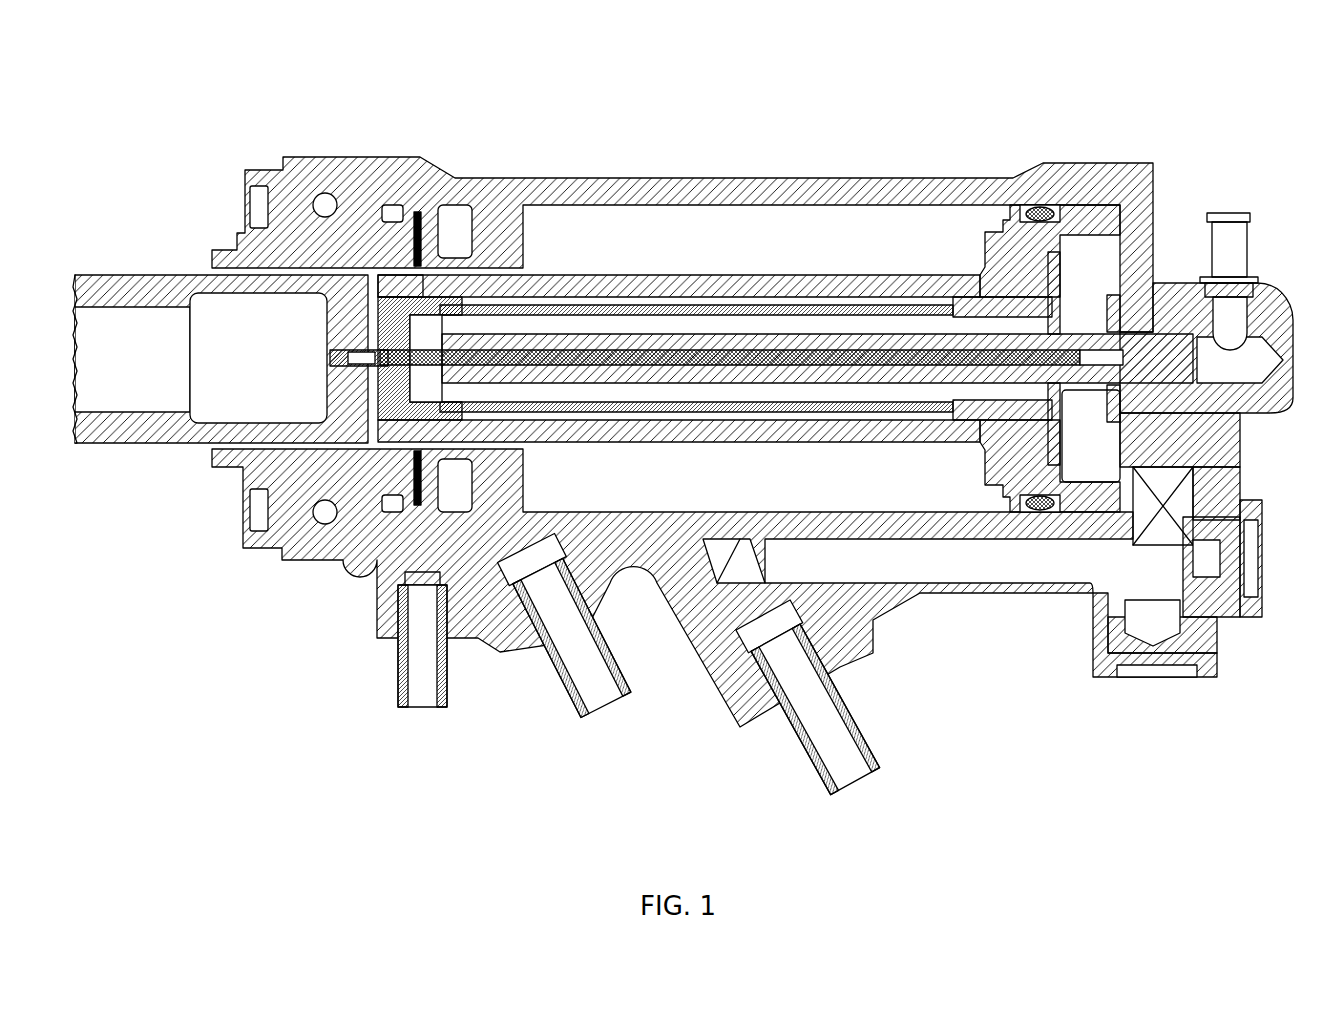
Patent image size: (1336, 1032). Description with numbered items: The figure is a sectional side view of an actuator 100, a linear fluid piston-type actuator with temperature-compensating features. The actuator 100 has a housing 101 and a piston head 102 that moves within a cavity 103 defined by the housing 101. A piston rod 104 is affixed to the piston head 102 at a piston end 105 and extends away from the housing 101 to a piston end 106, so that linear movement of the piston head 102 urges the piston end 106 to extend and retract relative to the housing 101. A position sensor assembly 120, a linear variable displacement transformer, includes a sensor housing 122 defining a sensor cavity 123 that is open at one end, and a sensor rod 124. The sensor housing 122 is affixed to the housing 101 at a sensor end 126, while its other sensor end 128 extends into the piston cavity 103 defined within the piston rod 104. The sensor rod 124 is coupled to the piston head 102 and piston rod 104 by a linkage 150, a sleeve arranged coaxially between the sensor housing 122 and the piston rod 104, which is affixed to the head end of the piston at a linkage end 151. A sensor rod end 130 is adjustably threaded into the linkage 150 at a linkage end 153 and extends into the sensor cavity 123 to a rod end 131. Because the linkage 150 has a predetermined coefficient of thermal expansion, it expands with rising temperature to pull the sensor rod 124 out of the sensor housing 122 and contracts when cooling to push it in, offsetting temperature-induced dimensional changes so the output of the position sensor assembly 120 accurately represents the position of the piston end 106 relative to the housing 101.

The actuator 100 is at (168, 74).
The housing 101 is at (1275, 414).
The piston head 102 is at (985, 472).
The cavity 103 is at (547, 480).
The piston rod 104 is at (670, 443).
The piston end 105 is at (977, 453).
The piston end 106 is at (166, 444).
The position sensor assembly 120 is at (1083, 410).
The sensor housing 122 is at (1090, 328).
The sensor cavity 123 is at (1125, 360).
The sensor rod 124 is at (748, 366).
The sensor end 126 is at (1123, 332).
The sensor end 128 is at (430, 368).
The sensor rod end 130 is at (421, 352).
The rod end 131 is at (1070, 353).
The linkage 150 is at (1066, 320).
The linkage end 151 is at (1048, 267).
The linkage end 153 is at (410, 330).